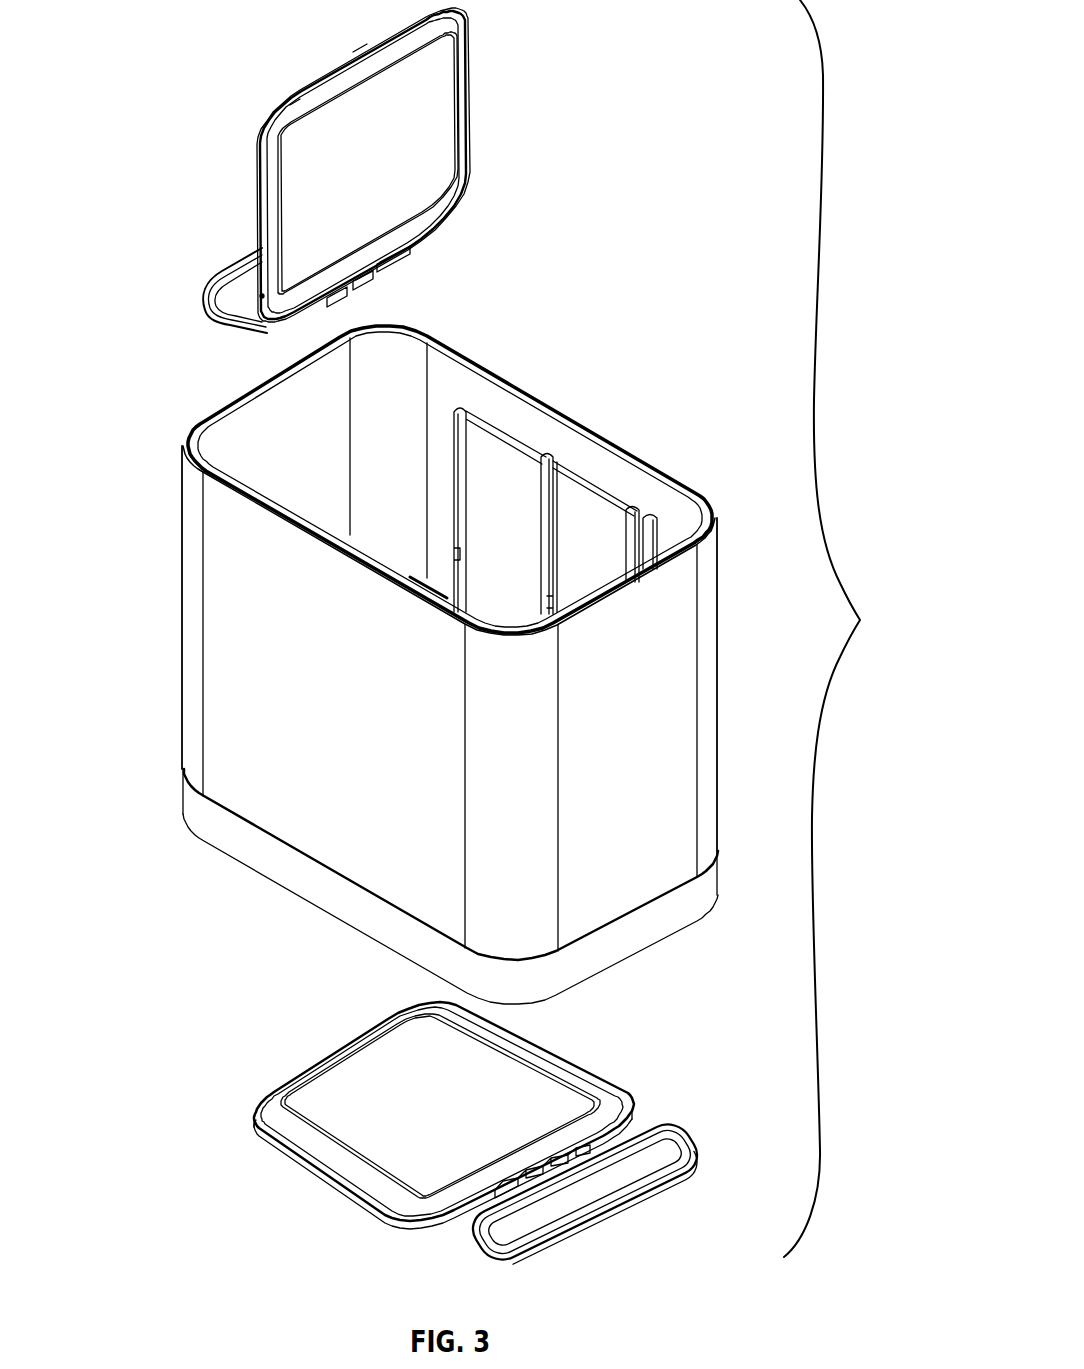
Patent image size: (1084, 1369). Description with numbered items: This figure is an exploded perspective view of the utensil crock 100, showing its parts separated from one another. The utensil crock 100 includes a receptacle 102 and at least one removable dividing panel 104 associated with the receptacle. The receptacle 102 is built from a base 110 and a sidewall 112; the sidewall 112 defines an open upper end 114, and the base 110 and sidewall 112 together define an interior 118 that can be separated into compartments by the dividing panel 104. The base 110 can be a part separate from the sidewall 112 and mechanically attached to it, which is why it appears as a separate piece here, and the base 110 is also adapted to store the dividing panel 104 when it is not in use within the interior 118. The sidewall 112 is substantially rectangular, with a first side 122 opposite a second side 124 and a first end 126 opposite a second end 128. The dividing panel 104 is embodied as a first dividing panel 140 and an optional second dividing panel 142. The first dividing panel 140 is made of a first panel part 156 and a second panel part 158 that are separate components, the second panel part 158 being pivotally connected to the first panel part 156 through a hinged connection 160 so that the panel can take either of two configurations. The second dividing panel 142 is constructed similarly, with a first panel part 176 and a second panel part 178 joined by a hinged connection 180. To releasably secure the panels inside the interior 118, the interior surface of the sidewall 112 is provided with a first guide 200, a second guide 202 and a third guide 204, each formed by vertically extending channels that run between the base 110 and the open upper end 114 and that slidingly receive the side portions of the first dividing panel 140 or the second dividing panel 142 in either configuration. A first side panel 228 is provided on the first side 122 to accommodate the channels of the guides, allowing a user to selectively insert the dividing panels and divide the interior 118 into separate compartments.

The utensil crock 100 is at (850, 628).
The receptacle 102 is at (449, 650).
The dividing panel 104 is at (452, 637).
The base 110 is at (248, 837).
The sidewall 112 is at (667, 693).
The open upper end 114 is at (500, 410).
The interior 118 is at (233, 447).
The first side 122 is at (443, 387).
The second side 124 is at (382, 863).
The first end 126 is at (267, 433).
The second end 128 is at (667, 630).
The first dividing panel 140 is at (393, 170).
The second dividing panel 142 is at (471, 1133).
The first panel part 156 is at (435, 150).
The second panel part 158 is at (243, 283).
The hinged connection 160 is at (392, 268).
The first panel part 176 is at (550, 1092).
The second panel part 178 is at (655, 1155).
The hinged connection 180 is at (535, 1165).
The first guide 200 is at (470, 462).
The second guide 202 is at (643, 547).
The third guide 204 is at (653, 547).
The first side panel 228 is at (621, 557).